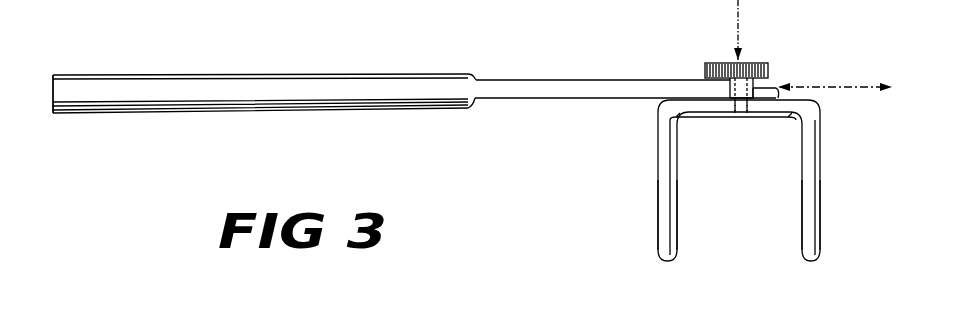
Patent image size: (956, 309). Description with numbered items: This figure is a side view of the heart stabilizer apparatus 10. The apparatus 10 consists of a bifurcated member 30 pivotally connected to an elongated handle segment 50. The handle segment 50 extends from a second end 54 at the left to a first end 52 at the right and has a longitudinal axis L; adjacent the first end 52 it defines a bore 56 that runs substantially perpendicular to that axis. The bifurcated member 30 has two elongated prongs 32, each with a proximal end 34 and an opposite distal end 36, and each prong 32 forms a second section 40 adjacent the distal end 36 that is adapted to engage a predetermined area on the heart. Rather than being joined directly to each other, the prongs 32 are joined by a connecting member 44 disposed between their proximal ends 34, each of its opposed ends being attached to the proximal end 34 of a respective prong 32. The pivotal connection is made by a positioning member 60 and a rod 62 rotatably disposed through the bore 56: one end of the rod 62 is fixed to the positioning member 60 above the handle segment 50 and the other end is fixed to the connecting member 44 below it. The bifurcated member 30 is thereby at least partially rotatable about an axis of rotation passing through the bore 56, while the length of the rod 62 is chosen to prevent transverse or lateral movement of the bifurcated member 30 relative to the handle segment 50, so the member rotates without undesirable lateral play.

The apparatus 10 is at (585, 47).
The bifurcated member 30 is at (658, 187).
The elongated prongs 32 is at (822, 190).
The proximal end 34 is at (787, 115).
The distal end 36 is at (683, 128).
The second section 40 is at (678, 204).
The connecting member 44 is at (768, 110).
The elongated handle segment 50 is at (300, 78).
The first end 52 is at (755, 88).
The second end 54 is at (53, 75).
The bore 56 is at (736, 114).
The positioning member 60 is at (730, 62).
The rod 62 is at (733, 88).